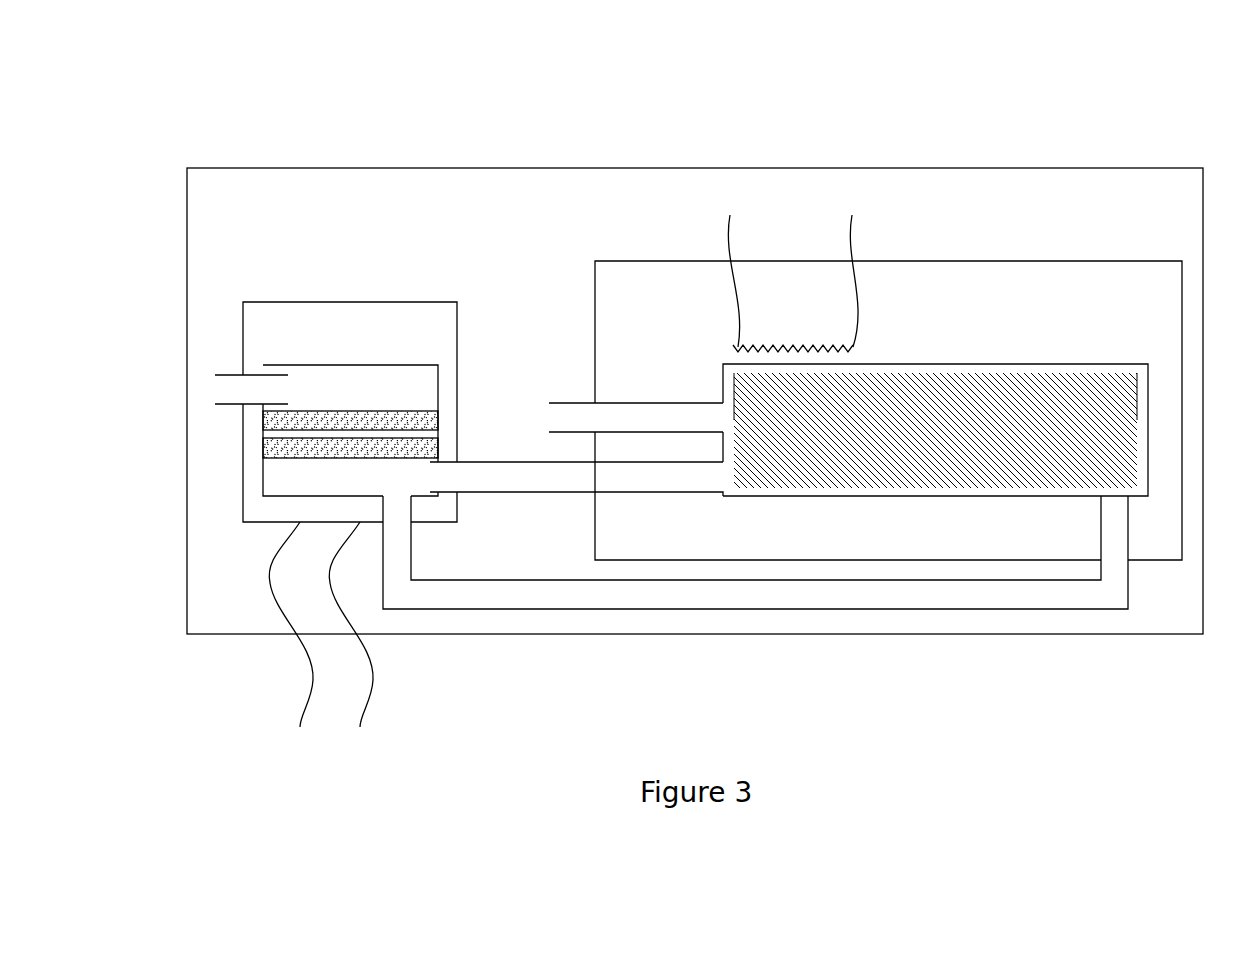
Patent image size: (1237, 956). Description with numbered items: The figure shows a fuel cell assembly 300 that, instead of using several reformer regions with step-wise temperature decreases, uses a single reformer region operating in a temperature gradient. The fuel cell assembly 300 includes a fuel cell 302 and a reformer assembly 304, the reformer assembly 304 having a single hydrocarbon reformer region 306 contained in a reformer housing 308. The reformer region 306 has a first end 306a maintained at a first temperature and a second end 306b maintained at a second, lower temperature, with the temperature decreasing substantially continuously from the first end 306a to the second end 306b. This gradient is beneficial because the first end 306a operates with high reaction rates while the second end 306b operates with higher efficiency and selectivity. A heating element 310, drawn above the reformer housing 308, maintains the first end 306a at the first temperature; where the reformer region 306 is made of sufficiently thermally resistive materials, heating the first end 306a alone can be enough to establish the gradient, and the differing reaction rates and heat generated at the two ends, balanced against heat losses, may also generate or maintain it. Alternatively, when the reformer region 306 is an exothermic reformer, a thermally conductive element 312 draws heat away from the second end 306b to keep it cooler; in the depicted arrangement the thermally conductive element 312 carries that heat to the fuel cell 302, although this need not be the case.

The fuel cell assembly 300 is at (280, 118).
The fuel cell 302 is at (355, 365).
The reformer assembly 304 is at (577, 230).
The hydrocarbon reformer region 306 is at (943, 383).
The first end of the reformer region 306a is at (762, 427).
The second end of the reformer region 306b is at (1098, 423).
The reformer housing 308 is at (1033, 363).
The heating element 310 is at (822, 340).
The thermally conductive element 312 is at (692, 599).